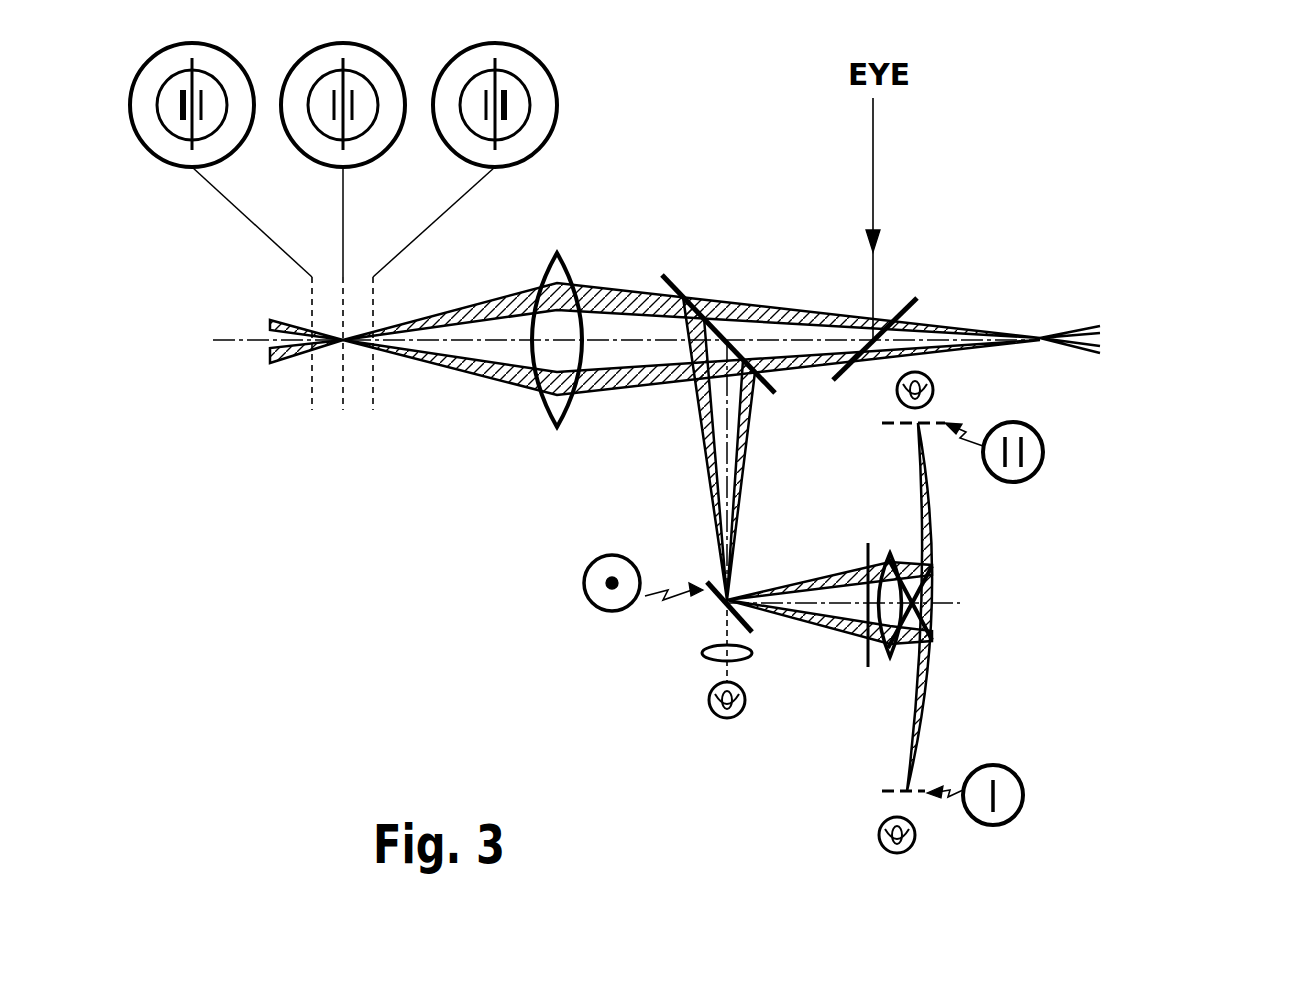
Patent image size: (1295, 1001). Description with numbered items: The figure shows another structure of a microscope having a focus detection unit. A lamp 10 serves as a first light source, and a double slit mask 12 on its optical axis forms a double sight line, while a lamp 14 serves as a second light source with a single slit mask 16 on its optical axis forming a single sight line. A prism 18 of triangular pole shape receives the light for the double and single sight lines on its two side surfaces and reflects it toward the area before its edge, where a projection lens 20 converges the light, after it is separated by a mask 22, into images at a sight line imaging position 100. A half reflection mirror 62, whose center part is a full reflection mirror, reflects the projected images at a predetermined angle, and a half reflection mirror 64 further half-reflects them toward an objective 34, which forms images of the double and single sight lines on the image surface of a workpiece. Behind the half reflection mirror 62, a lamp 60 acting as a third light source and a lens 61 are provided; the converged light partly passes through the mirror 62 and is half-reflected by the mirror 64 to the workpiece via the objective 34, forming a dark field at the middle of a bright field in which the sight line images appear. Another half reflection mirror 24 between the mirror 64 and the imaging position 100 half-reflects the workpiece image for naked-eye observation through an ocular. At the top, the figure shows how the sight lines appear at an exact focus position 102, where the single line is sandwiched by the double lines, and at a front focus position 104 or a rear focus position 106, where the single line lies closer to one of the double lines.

The lamp 10 is at (935, 394).
The double slit mask 12 is at (1043, 462).
The lamp 14 is at (912, 846).
The single slit mask 16 is at (1023, 792).
The prism 18 is at (938, 602).
The projection lens 20 is at (888, 553).
The mask 22 is at (868, 668).
The half reflection mirror 24 is at (912, 298).
The objective 34 is at (557, 253).
The lamp 60 is at (712, 713).
The lens 61 is at (752, 652).
The half reflection mirror 62 is at (597, 605).
The half reflection mirror 64 is at (676, 287).
The sight line imaging position 100 is at (1040, 330).
The exact focus position 102 is at (343, 410).
The front focus position 104 is at (373, 410).
The rear focus position 106 is at (312, 410).